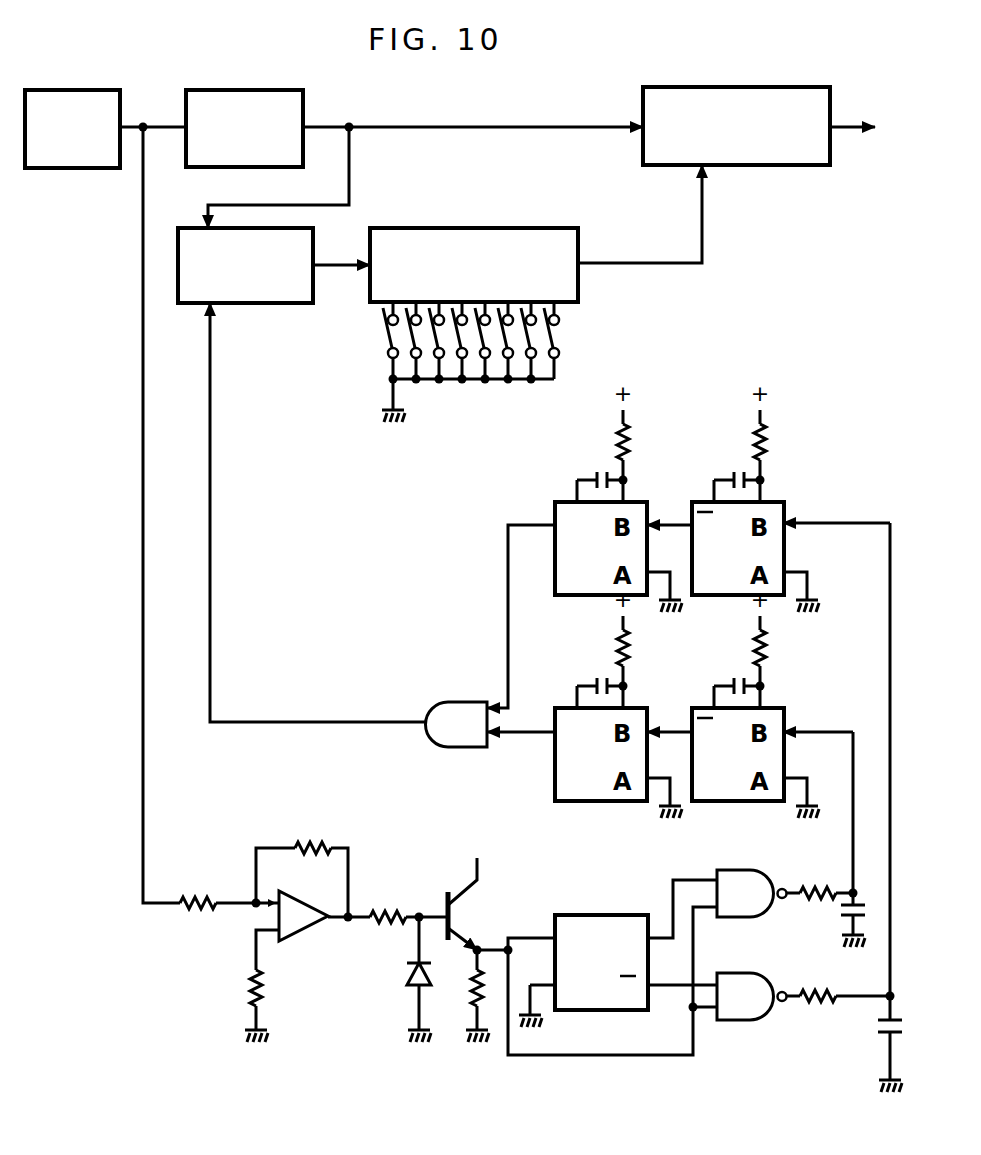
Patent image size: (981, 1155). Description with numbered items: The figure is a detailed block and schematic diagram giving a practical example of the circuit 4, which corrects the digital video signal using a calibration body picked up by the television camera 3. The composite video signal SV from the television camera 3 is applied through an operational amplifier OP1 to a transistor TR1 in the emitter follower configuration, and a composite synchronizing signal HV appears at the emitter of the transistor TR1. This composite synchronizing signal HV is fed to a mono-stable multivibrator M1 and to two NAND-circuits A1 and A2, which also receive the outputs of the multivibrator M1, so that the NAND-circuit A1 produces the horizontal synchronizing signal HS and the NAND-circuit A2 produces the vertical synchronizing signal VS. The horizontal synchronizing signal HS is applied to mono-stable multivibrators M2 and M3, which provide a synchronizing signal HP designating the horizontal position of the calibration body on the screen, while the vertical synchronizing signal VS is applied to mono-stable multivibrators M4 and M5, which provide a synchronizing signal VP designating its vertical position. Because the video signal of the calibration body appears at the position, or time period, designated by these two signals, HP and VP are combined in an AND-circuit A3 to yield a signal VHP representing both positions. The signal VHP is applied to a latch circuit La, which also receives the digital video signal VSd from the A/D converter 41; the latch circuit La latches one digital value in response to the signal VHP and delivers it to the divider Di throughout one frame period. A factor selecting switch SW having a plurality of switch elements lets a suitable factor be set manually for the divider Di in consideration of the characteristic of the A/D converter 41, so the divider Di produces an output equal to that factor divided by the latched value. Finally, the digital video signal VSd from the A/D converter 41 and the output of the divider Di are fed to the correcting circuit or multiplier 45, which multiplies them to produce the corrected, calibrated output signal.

The television camera 3 is at (90, 170).
The A/D converter 41 is at (258, 90).
The correcting circuit or multiplier 45 is at (723, 87).
The circuit 4 is at (478, 186).
The composite video signal SV is at (136, 115).
The digital video signal VSd is at (345, 125).
The latch circuit La is at (280, 305).
The divider Di is at (545, 227).
The factor selecting switch SW is at (562, 336).
The mono-stable multivibrator M5 is at (644, 498).
The mono-stable multivibrator M4 is at (781, 498).
The mono-stable multivibrator M3 is at (623, 805).
The mono-stable multivibrator M2 is at (760, 805).
The mono-stable multivibrator M1 is at (596, 916).
The vertical synchronizing signal VS is at (844, 525).
The horizontal synchronizing signal HS is at (828, 726).
The synchronizing signal VP is at (511, 636).
The synchronizing signal HP is at (512, 736).
The signal VHP is at (338, 718).
The AND-circuit A3 is at (442, 749).
The NAND-circuit A1 is at (746, 919).
The NAND-circuit A2 is at (746, 1022).
The operational amplifier OP1 is at (312, 945).
The transistor TR1 is at (446, 898).
The composite synchronizing signal HV is at (492, 935).